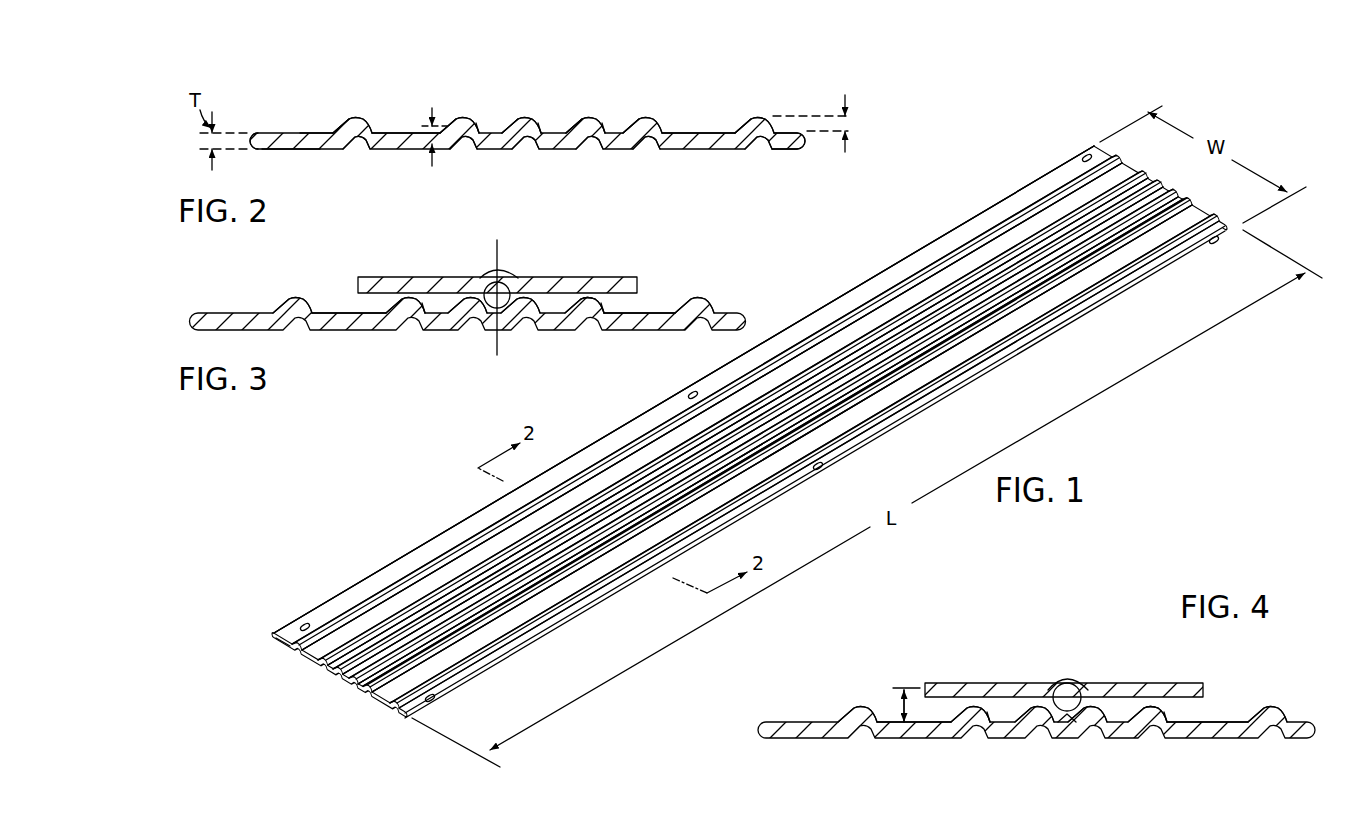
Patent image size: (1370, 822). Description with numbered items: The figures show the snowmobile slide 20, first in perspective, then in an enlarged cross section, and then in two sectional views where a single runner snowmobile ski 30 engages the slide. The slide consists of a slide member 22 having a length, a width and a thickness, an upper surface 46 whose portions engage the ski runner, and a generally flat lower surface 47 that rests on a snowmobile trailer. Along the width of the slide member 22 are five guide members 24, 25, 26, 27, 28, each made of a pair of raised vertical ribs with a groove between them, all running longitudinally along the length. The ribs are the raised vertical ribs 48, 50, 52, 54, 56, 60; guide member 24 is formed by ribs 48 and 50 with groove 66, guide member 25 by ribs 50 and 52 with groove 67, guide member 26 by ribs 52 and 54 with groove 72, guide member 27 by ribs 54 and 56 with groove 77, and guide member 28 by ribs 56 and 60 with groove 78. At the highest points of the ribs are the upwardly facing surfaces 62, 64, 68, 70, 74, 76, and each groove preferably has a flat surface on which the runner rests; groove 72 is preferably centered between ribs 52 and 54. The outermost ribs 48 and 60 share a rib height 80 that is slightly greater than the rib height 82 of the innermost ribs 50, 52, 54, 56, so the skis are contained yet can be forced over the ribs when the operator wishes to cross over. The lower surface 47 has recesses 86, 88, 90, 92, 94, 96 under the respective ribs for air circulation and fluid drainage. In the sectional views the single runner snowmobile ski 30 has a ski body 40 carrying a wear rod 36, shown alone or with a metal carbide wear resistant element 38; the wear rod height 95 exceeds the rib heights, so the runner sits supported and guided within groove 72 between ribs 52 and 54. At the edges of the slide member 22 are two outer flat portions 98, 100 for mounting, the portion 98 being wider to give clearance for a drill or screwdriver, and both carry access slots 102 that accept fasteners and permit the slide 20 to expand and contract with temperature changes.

In FIG. 2, the snowmobile slide 20 is at (808, 62).
In FIG. 3, the snowmobile slide 20 is at (742, 262).
In FIG. 4, the snowmobile slide 20 is at (1285, 688).
In FIG. 1, the snowmobile slide 20 is at (1081, 124).
In FIG. 1, the slide member 22 is at (560, 460).
In FIG. 1, the guide member 24 is at (299, 651).
In FIG. 1, the guide member 25 is at (323, 668).
In FIG. 1, the guide member 26 is at (341, 680).
In FIG. 1, the guide member 27 is at (360, 688).
In FIG. 1, the guide member 28 is at (379, 700).
In FIG. 3, the single runner snowmobile ski 30 is at (516, 241).
In FIG. 4, the single runner snowmobile ski 30 is at (1048, 632).
In FIG. 3, the wear rod 36 is at (492, 282).
In FIG. 4, the wear rod 36 is at (1061, 684).
In FIG. 4, the wear resistant element 38 is at (1063, 728).
In FIG. 3, the ski body 40 is at (630, 277).
In FIG. 4, the ski body 40 is at (1205, 683).
In FIG. 2, the upper surface 46 is at (295, 133).
In FIG. 1, the upper surface 46 is at (929, 251).
In FIG. 2, the lower surface 47 is at (292, 150).
In FIG. 1, the lower surface 47 is at (278, 644).
In FIG. 2, the raised vertical rib 48 is at (352, 122).
In FIG. 1, the raised vertical rib 48 is at (363, 598).
In FIG. 2, the raised vertical rib 50 is at (452, 124).
In FIG. 1, the raised vertical rib 50 is at (407, 613).
In FIG. 2, the raised vertical rib 52 is at (519, 122).
In FIG. 1, the raised vertical rib 52 is at (428, 618).
In FIG. 2, the raised vertical rib 54 is at (583, 122).
In FIG. 1, the raised vertical rib 54 is at (455, 618).
In FIG. 2, the raised vertical rib 56 is at (642, 122).
In FIG. 1, the raised vertical rib 56 is at (522, 608).
In FIG. 2, the raised vertical rib 60 is at (759, 120).
In FIG. 1, the raised vertical rib 60 is at (505, 660).
In FIG. 2, the upwardly facing surface 62 is at (360, 118).
In FIG. 3, the upwardly facing surface 62 is at (295, 298).
In FIG. 4, the upwardly facing surface 62 is at (860, 705).
In FIG. 2, the upwardly facing surface 64 is at (470, 120).
In FIG. 3, the upwardly facing surface 64 is at (408, 300).
In FIG. 4, the upwardly facing surface 64 is at (973, 705).
In FIG. 2, the groove 66 is at (413, 133).
In FIG. 3, the groove 66 is at (355, 313).
In FIG. 4, the groove 66 is at (888, 722).
In FIG. 2, the groove 67 is at (497, 131).
In FIG. 3, the groove 67 is at (428, 313).
In FIG. 4, the groove 67 is at (1005, 722).
In FIG. 2, the upwardly facing surface 68 is at (531, 120).
In FIG. 3, the upwardly facing surface 68 is at (468, 300).
In FIG. 4, the upwardly facing surface 68 is at (1033, 712).
In FIG. 2, the upwardly facing surface 70 is at (592, 120).
In FIG. 3, the upwardly facing surface 70 is at (541, 313).
In FIG. 4, the upwardly facing surface 70 is at (1113, 722).
In FIG. 2, the groove 72 is at (558, 131).
In FIG. 3, the groove 72 is at (521, 300).
In FIG. 4, the groove 72 is at (1095, 705).
In FIG. 2, the upwardly facing surface 74 is at (652, 120).
In FIG. 3, the upwardly facing surface 74 is at (593, 300).
In FIG. 4, the upwardly facing surface 74 is at (1156, 708).
In FIG. 2, the upwardly facing surface 76 is at (768, 118).
In FIG. 3, the upwardly facing surface 76 is at (702, 298).
In FIG. 4, the upwardly facing surface 76 is at (1270, 705).
In FIG. 2, the groove 77 is at (615, 131).
In FIG. 3, the groove 77 is at (573, 313).
In FIG. 4, the groove 77 is at (1138, 722).
In FIG. 2, the groove 78 is at (712, 133).
In FIG. 3, the groove 78 is at (641, 312).
In FIG. 4, the groove 78 is at (1220, 722).
In FIG. 2, the rib height 80 is at (846, 104).
In FIG. 2, the rib height 82 is at (431, 160).
In FIG. 2, the recess 86 is at (357, 143).
In FIG. 2, the recess 88 is at (463, 143).
In FIG. 2, the recess 90 is at (524, 143).
In FIG. 2, the recess 92 is at (587, 143).
In FIG. 4, the recess 92 is at (897, 690).
In FIG. 2, the recess 94 is at (645, 143).
In FIG. 3, the wear rod height 95 is at (495, 336).
In FIG. 2, the recess 96 is at (757, 143).
In FIG. 2, the outer flat portion 98 is at (262, 134).
In FIG. 1, the outer flat portion 98 is at (279, 630).
In FIG. 2, the outer flat portion 100 is at (807, 131).
In FIG. 1, the outer flat portion 100 is at (401, 717).
In FIG. 1, the access slot 102 is at (304, 623).